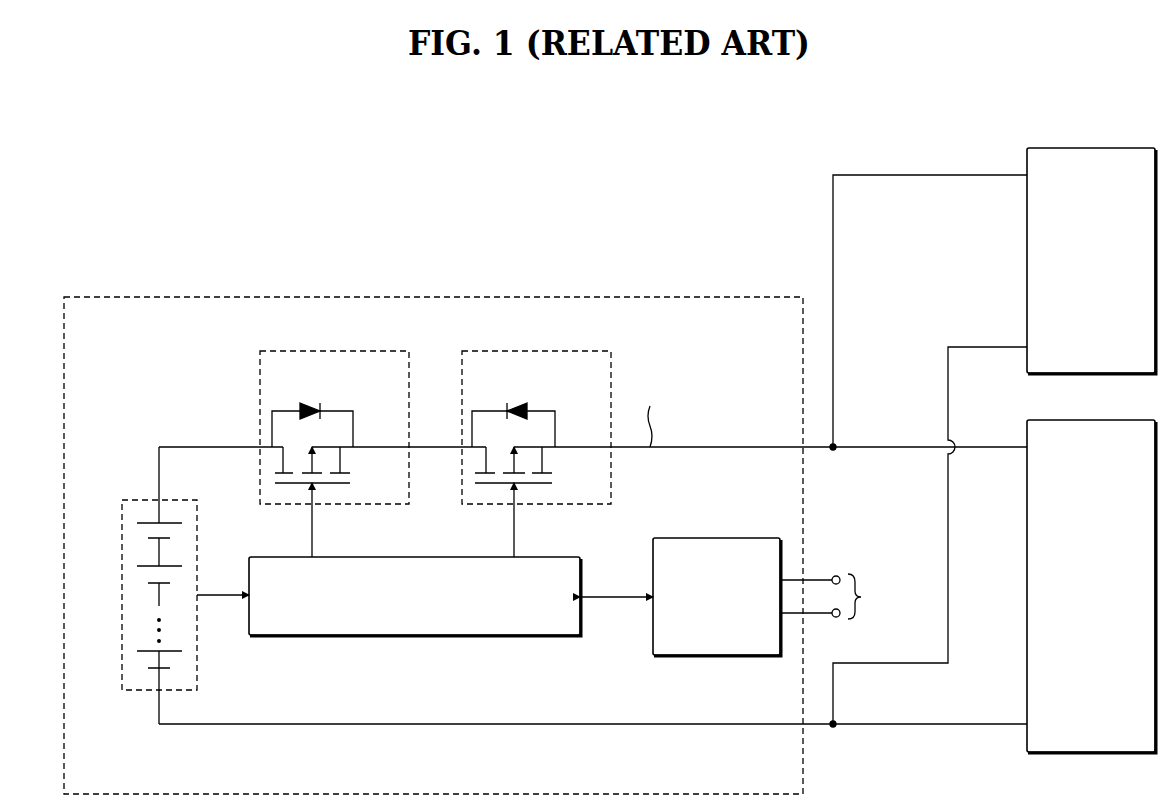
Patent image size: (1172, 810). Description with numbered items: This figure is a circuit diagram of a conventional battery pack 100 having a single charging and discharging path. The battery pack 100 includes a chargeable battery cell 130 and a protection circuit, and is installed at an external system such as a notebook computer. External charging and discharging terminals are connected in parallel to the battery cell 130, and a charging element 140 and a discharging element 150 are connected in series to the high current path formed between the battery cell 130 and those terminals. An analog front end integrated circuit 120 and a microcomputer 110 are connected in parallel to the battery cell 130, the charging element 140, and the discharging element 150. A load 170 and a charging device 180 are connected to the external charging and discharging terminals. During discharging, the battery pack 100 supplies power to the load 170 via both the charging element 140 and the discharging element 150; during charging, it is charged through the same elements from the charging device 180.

The battery pack 100 is at (523, 297).
The microcomputer 110 is at (730, 538).
The analog front end integrated circuit 120 is at (393, 557).
The battery cell 130 is at (138, 500).
The charging element 140 is at (338, 351).
The discharging element 150 is at (540, 351).
The load 170 is at (1093, 420).
The charging device 180 is at (1093, 148).